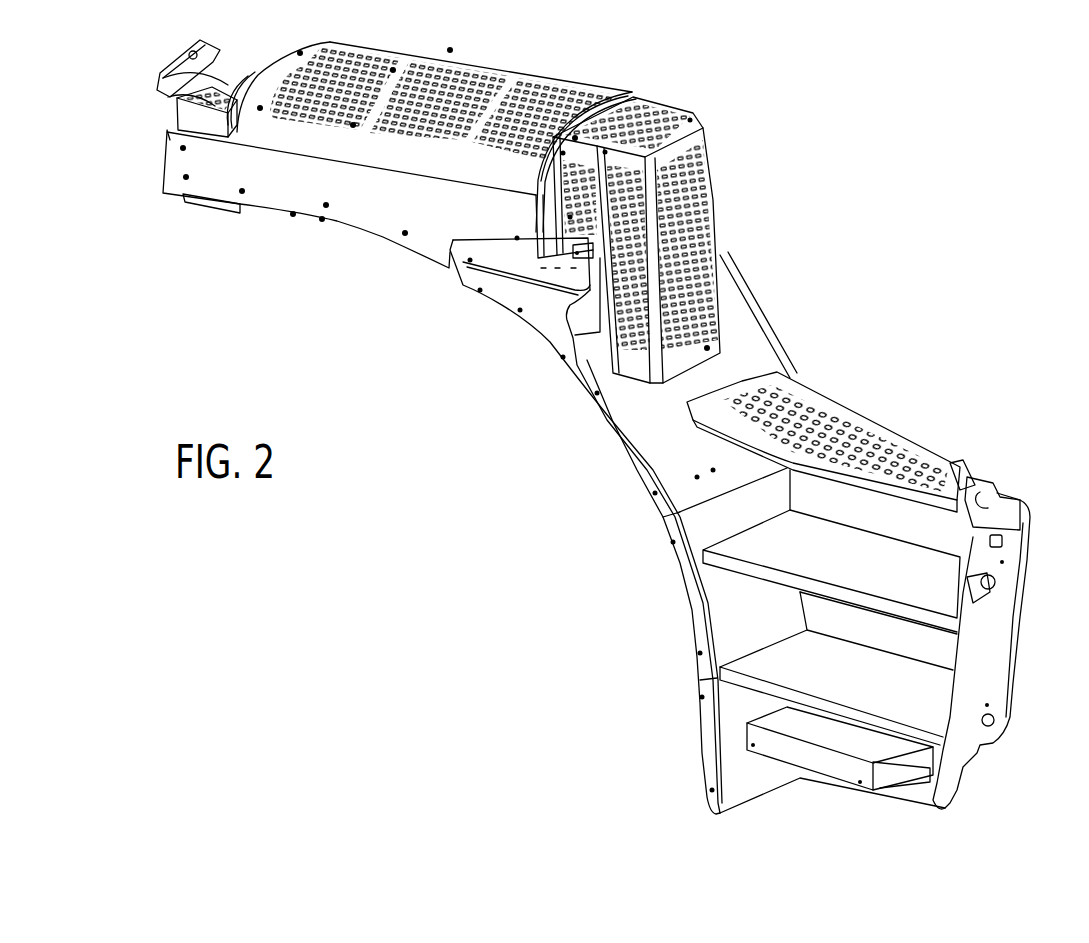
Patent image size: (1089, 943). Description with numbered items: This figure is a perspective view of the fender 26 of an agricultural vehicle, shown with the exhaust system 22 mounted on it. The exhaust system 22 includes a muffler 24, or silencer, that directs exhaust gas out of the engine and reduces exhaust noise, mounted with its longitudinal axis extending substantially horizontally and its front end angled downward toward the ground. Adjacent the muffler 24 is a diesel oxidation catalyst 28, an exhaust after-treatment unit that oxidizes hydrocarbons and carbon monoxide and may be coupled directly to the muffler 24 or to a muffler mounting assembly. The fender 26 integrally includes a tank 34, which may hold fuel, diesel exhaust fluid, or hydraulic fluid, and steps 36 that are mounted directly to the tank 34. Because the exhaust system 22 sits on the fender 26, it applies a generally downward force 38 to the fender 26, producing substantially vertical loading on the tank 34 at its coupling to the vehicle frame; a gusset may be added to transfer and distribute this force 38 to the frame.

The exhaust system 22 is at (676, 74).
The muffler 24 is at (297, 57).
The fender 26 is at (510, 425).
The diesel oxidation catalyst 28 is at (693, 143).
The tank 34 is at (997, 633).
The steps 36 is at (750, 567).
The force 38 is at (979, 422).